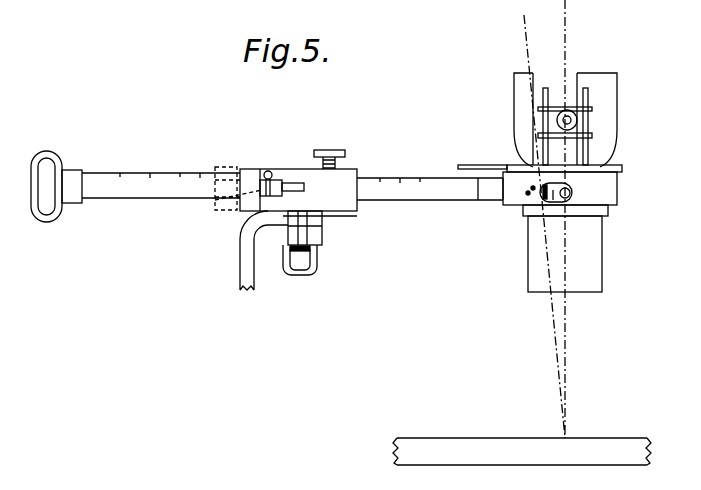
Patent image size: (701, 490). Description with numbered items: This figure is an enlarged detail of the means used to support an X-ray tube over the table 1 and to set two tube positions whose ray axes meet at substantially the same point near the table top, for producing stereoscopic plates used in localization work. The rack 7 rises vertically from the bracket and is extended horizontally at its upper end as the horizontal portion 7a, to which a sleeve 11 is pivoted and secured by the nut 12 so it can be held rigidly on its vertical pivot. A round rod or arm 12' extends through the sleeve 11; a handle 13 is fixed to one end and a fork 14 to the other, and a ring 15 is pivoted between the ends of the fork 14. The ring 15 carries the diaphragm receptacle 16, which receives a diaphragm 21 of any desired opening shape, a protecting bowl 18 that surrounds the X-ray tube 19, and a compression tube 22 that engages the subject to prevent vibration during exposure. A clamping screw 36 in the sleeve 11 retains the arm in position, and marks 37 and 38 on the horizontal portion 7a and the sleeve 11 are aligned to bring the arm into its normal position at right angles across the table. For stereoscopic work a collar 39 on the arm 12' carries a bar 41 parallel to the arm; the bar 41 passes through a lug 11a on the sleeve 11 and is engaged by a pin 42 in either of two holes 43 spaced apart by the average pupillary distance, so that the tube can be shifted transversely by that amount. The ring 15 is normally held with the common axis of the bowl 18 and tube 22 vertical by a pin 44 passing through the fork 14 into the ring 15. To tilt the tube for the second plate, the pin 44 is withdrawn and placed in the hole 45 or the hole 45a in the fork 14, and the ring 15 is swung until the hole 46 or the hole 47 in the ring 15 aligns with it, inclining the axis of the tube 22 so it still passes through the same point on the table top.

The table 1 is at (478, 443).
The rack 7 is at (240, 272).
The horizontal portion of the rack 7a is at (316, 238).
The sleeve 11 is at (288, 170).
The lug 11a is at (217, 198).
The nut 12 is at (300, 275).
The rod or arm 12' is at (430, 174).
The handle 13 is at (67, 176).
The fork 14 is at (553, 198).
The ring 15 is at (618, 192).
The diaphragm receptacle 16 is at (622, 168).
The protecting bowl 18 is at (617, 118).
The X-ray tube 19 is at (575, 112).
The diaphragm 21 is at (460, 165).
The compression tube 22 is at (595, 242).
The clamping screw 36 is at (331, 150).
The mark 37 is at (322, 222).
The mark 38 is at (357, 212).
The collar 39 is at (242, 170).
The bar 41 is at (300, 183).
The pin 42 is at (268, 170).
The holes 43 is at (244, 205).
The pin 44 is at (545, 199).
The hole 45 is at (530, 184).
The hole 45a is at (526, 194).
The hole 46 is at (530, 180).
The hole 47 is at (527, 197).